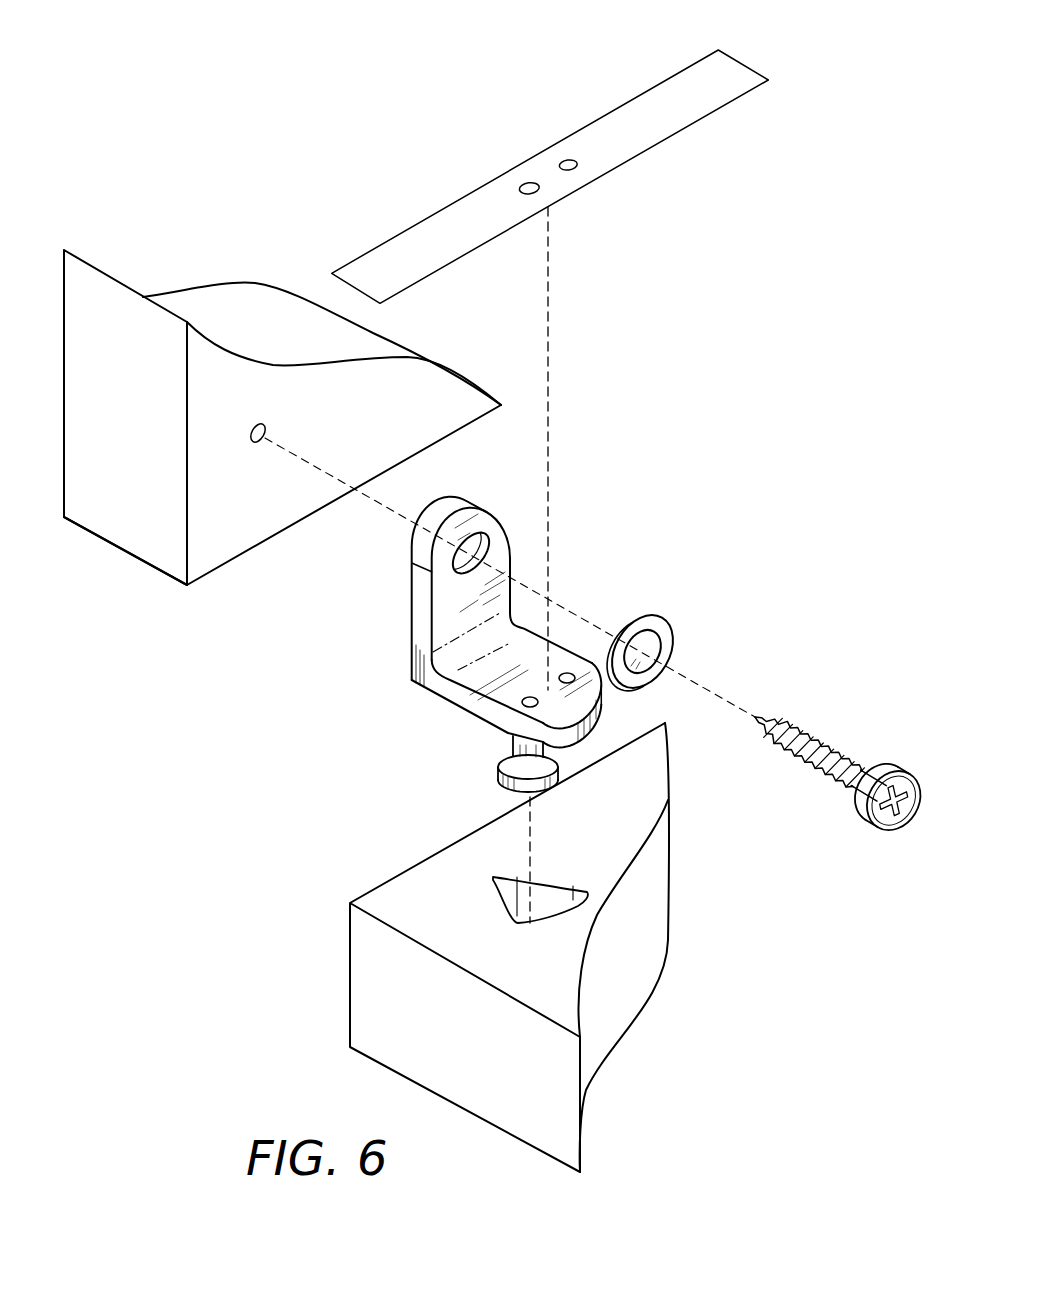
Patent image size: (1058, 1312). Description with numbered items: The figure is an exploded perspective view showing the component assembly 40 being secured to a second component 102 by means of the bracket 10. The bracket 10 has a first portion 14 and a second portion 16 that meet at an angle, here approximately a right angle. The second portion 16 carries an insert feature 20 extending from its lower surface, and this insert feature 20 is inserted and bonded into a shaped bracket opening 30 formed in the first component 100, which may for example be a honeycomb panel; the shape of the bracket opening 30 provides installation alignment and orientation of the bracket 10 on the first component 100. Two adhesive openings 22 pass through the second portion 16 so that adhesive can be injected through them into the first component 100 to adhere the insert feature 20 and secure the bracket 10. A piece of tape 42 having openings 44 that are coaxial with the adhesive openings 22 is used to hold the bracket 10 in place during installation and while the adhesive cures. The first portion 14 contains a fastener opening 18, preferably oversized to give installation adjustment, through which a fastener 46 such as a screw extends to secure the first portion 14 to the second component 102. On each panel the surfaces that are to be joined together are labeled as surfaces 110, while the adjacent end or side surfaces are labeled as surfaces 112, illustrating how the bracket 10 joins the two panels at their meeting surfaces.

The bracket 10 is at (500, 603).
The first portion 14 is at (515, 567).
The second portion 16 is at (500, 663).
The fastener opening 18 is at (472, 555).
The insert feature 20 is at (488, 757).
The adhesive openings 22 is at (568, 673).
The bracket opening 30 is at (542, 875).
The component assembly 40 is at (631, 426).
The tape 42 is at (550, 158).
The openings 44 is at (569, 160).
The fastener 46 is at (830, 743).
The first component 100 is at (563, 947).
The second component 102 is at (282, 570).
The surfaces to be joined 110 is at (208, 540).
The end or side surfaces 112 is at (218, 570).